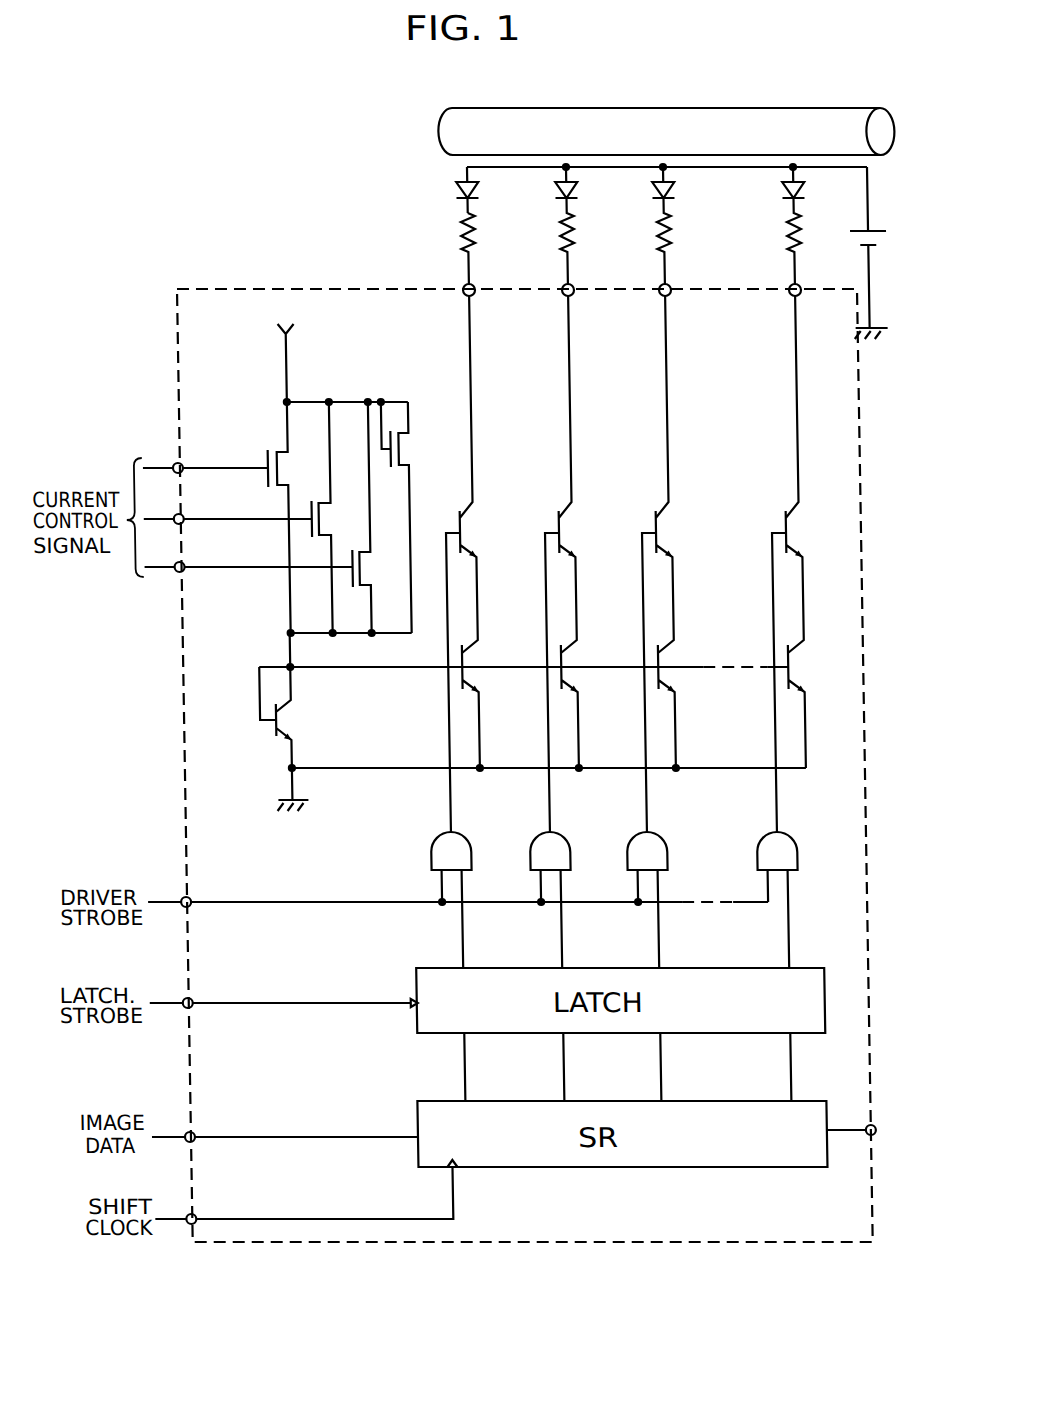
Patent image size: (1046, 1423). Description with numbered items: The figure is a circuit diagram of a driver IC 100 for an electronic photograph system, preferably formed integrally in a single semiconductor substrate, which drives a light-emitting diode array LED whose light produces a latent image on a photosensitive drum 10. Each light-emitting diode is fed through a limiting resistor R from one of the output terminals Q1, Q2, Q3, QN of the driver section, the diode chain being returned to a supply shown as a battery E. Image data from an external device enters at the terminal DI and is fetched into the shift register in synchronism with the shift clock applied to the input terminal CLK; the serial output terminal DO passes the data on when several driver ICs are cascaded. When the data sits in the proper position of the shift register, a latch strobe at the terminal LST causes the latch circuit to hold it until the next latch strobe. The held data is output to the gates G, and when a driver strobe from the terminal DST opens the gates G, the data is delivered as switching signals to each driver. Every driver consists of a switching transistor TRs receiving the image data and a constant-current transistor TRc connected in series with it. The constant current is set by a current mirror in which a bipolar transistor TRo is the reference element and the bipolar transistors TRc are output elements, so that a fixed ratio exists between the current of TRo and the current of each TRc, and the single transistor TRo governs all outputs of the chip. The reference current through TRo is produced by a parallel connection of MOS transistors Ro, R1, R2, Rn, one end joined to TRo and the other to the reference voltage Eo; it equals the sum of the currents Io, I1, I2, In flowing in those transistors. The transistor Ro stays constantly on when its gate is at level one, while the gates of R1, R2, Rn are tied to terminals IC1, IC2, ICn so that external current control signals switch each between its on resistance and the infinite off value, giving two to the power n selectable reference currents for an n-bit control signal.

The photosensitive drum 10 is at (824, 107).
The driver IC 100 is at (641, 1245).
The light-emitting diode array LED is at (457, 190).
The limiting resistor R is at (457, 233).
The output terminal Q1 is at (462, 286).
The output terminal Q2 is at (562, 287).
The output terminal Q3 is at (658, 287).
The output terminal QN is at (789, 287).
The power supply battery E is at (886, 243).
The reference voltage Eo is at (295, 348).
The MOS transistor R1 is at (270, 450).
The MOS transistor R2 is at (311, 500).
The MOS transistor Rn is at (350, 548).
The MOS transistor Ro is at (408, 445).
The terminal IC1 is at (180, 462).
The terminal IC2 is at (180, 514).
The terminal ICn is at (180, 562).
The current value I1 is at (271, 616).
The current value I2 is at (320, 614).
The current value In is at (360, 595).
The current value Io is at (400, 616).
The switching transistor TRs is at (464, 537).
The constant-current transistor TRc is at (464, 657).
The bipolar transistor TRo is at (286, 724).
The gate G is at (421, 843).
The terminal DST is at (182, 897).
The terminal LST is at (182, 997).
The terminal DI is at (182, 1131).
The input terminal of the shift clock CLK is at (182, 1213).
The serial output terminal DO is at (864, 1124).